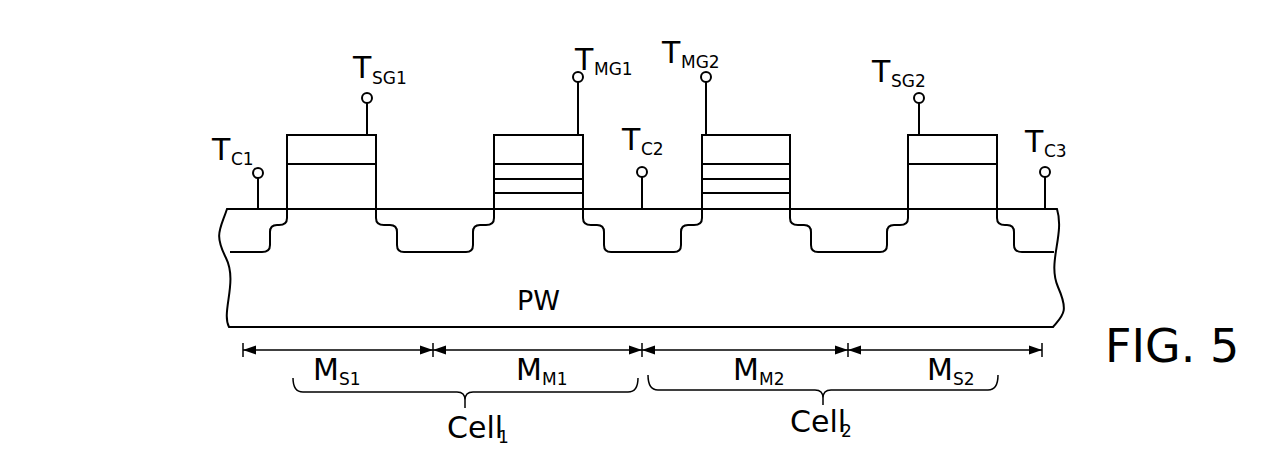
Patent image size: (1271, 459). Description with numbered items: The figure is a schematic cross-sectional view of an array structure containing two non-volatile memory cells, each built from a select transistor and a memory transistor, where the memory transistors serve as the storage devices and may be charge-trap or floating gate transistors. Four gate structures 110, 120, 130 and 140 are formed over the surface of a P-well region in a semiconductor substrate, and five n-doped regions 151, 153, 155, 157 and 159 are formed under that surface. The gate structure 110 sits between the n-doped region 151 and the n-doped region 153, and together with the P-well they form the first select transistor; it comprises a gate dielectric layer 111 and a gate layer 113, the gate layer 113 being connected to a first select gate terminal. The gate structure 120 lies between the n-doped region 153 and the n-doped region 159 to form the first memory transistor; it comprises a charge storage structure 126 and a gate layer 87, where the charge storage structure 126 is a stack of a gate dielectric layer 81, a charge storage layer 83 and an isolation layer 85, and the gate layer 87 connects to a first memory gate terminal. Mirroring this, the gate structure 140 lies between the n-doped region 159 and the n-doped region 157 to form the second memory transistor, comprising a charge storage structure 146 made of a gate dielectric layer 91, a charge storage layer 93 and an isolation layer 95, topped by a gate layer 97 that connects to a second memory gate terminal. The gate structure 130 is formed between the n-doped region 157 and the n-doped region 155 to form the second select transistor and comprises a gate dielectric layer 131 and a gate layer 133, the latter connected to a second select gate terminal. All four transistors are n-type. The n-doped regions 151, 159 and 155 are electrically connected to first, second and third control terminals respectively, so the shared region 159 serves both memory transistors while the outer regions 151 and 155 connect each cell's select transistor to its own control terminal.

The gate structure 110 is at (312, 123).
The gate dielectric layer 111 is at (327, 177).
The gate layer 113 is at (297, 147).
The gate structure 120 is at (498, 107).
The charge storage structure 126 is at (498, 131).
The gate dielectric layer 81 is at (500, 202).
The charge storage layer 83 is at (498, 190).
The isolation layer 85 is at (523, 172).
The gate layer 87 is at (545, 148).
The gate structure 140 is at (783, 107).
The charge storage structure 146 is at (783, 131).
The gate dielectric layer 91 is at (784, 202).
The charge storage layer 93 is at (786, 190).
The isolation layer 95 is at (762, 170).
The gate layer 97 is at (737, 148).
The gate structure 130 is at (970, 126).
The gate dielectric layer 131 is at (1012, 89).
The gate layer 133 is at (990, 148).
The n-doped region 151 is at (253, 245).
The n-doped region 153 is at (415, 245).
The n-doped region 155 is at (1028, 245).
The n-doped region 157 is at (853, 245).
The n-doped region 159 is at (650, 245).